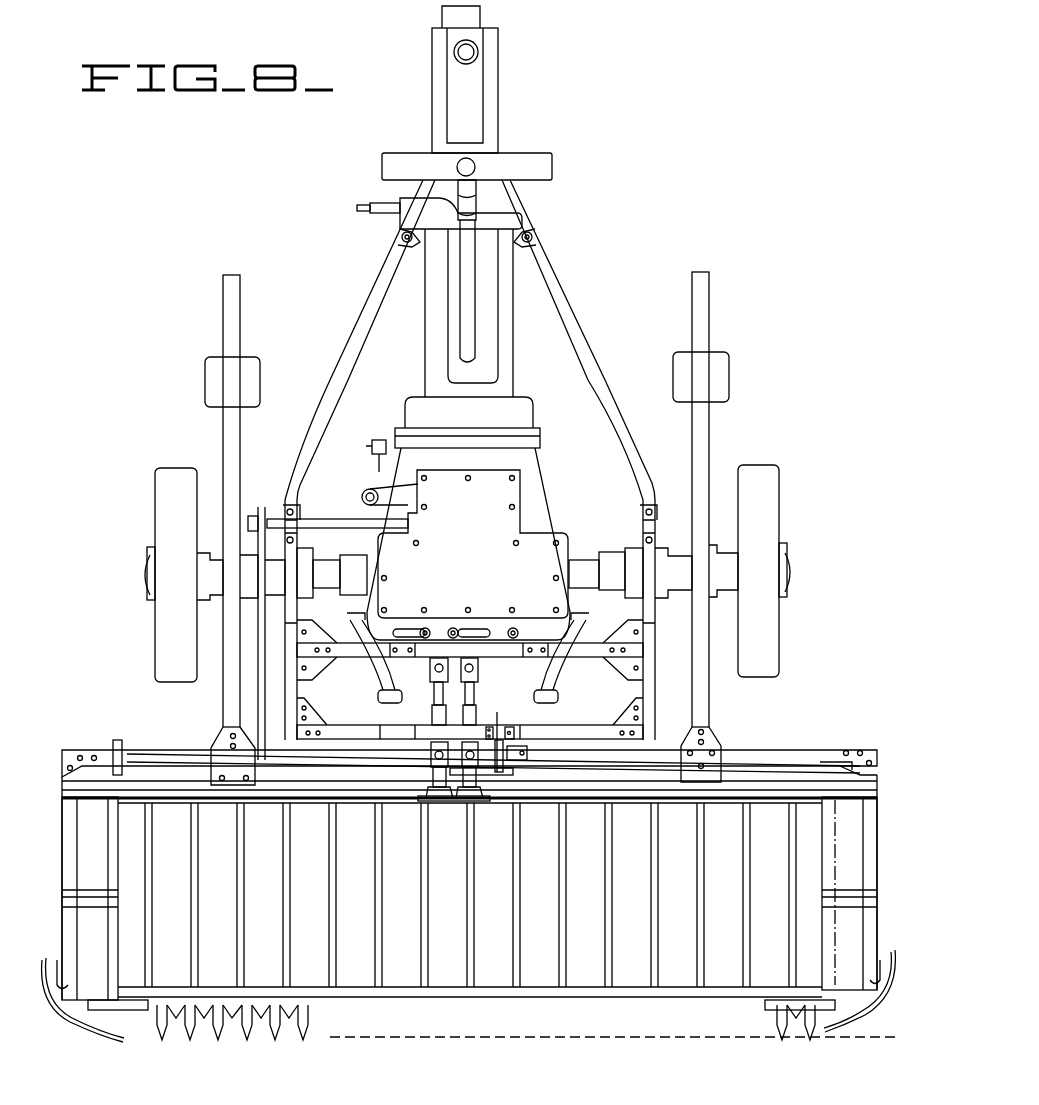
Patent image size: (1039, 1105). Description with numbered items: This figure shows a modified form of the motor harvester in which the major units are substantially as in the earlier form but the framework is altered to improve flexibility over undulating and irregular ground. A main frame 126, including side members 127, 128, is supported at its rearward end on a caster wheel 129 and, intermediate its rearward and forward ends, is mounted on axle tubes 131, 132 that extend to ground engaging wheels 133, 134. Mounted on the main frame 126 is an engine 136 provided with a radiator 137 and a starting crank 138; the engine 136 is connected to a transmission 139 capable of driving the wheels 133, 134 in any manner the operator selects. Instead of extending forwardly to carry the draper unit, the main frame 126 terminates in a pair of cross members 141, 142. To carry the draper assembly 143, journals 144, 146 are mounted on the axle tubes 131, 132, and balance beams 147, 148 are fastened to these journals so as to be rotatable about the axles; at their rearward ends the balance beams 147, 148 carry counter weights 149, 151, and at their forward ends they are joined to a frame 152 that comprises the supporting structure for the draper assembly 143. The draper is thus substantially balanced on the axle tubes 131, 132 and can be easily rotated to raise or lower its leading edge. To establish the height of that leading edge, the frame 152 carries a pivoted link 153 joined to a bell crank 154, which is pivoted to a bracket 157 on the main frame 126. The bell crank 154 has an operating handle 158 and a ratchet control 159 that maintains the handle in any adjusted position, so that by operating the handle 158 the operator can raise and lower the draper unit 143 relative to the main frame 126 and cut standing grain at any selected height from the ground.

The main frame 126 is at (357, 297).
The side member 127 is at (360, 330).
The side member 128 is at (576, 327).
The caster wheel 129 is at (482, 15).
The axle tube 131 is at (334, 548).
The axle tube 132 is at (606, 555).
The ground engaging wheel 133 is at (160, 492).
The ground engaging wheel 134 is at (766, 483).
The engine 136 is at (488, 327).
The radiator 137 is at (544, 170).
The starting crank 138 is at (366, 196).
The transmission 139 is at (484, 563).
The cross member 141 is at (338, 653).
The cross member 142 is at (344, 732).
The draper assembly 143 is at (513, 903).
The journal 144 is at (218, 590).
The journal 146 is at (722, 588).
The balance beam 147 is at (226, 430).
The balance beam 148 is at (709, 430).
The counter weight 149 is at (203, 376).
The counter weight 151 is at (731, 374).
The frame 152 is at (794, 758).
The pivoted link 153 is at (508, 768).
The bell crank 154 is at (510, 745).
The bracket 157 is at (514, 728).
The operating handle 158 is at (505, 722).
The ratchet control 159 is at (489, 722).